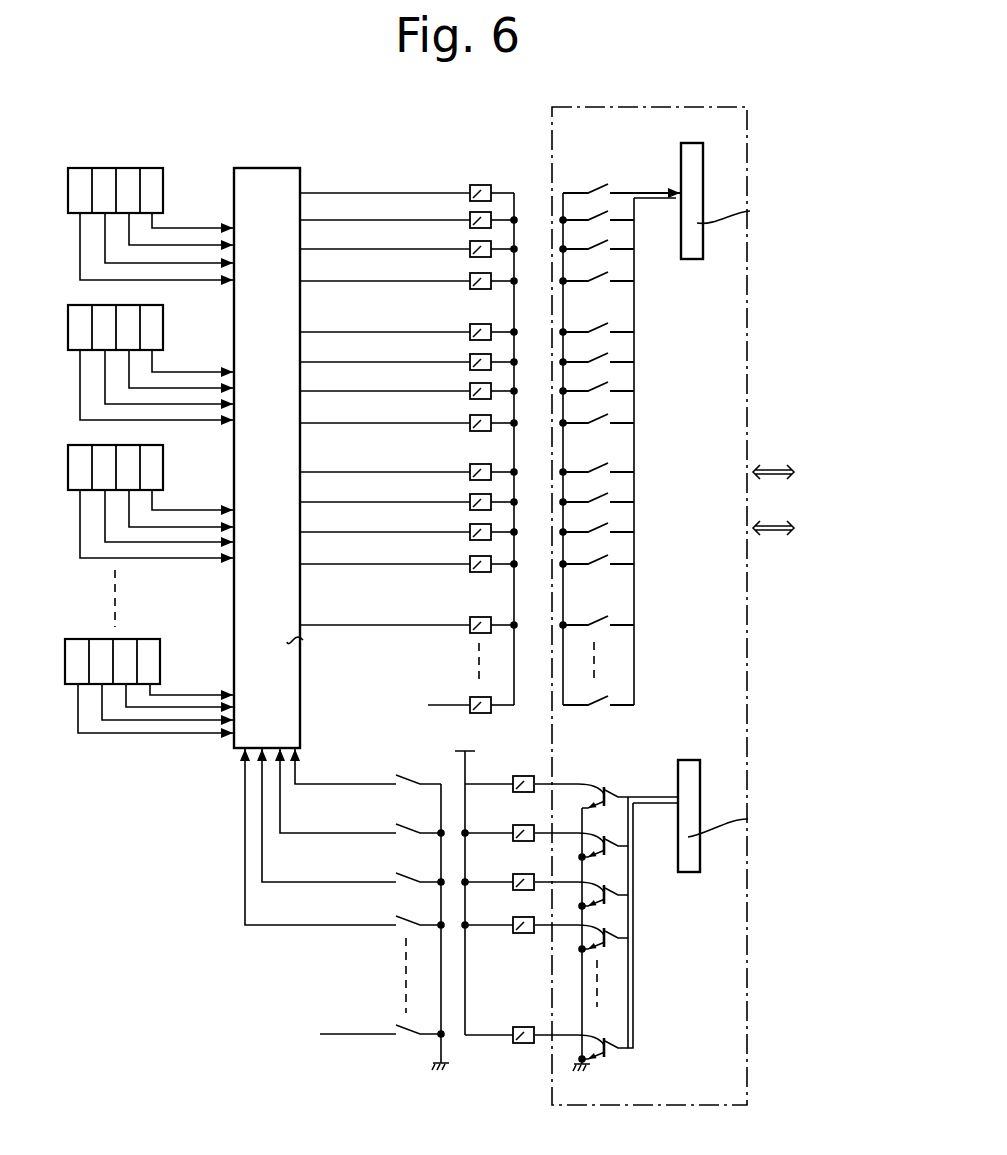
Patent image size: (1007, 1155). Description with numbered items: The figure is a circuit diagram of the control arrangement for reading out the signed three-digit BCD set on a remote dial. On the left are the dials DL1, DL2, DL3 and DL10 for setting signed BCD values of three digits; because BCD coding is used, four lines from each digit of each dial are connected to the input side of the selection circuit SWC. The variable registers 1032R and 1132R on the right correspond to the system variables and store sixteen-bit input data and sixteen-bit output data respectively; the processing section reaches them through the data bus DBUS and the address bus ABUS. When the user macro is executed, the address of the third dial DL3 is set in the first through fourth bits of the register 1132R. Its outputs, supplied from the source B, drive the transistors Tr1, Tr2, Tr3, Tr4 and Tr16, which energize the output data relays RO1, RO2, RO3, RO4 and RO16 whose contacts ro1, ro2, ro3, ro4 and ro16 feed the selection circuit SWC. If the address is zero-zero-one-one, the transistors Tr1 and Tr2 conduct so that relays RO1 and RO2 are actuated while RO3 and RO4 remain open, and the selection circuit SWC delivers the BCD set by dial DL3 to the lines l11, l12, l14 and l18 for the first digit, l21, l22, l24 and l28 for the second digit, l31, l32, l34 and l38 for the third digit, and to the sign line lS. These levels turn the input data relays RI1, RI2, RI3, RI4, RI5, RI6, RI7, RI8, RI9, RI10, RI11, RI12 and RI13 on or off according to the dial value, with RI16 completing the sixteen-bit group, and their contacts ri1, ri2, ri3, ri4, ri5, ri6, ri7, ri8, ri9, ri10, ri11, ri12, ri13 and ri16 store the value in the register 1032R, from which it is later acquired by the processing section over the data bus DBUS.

The selection circuit SWC is at (265, 168).
The dial DL1 is at (130, 168).
The dial DL2 is at (128, 306).
The third dial DL3 is at (128, 446).
The dial DL10 is at (130, 639).
The line l11 is at (385, 182).
The line l12 is at (385, 209).
The line l14 is at (385, 238).
The line l18 is at (385, 270).
The line l21 is at (385, 321).
The line l22 is at (385, 351).
The line l24 is at (385, 380).
The line l28 is at (385, 412).
The line l31 is at (385, 461).
The line l32 is at (385, 491).
The line l34 is at (385, 521).
The line l38 is at (385, 553).
The line lS is at (385, 613).
The input data relay RI1 is at (470, 186).
The input data relay RI2 is at (470, 213).
The input data relay RI3 is at (470, 242).
The input data relay RI4 is at (470, 274).
The input data relay RI5 is at (470, 325).
The input data relay RI6 is at (470, 355).
The input data relay RI7 is at (470, 384).
The input data relay RI8 is at (470, 416).
The input data relay RI9 is at (470, 465).
The input data relay RI10 is at (470, 495).
The input data relay RI11 is at (470, 525).
The input data relay RI12 is at (470, 557).
The input data relay RI13 is at (470, 617).
The input data relay RI16 is at (470, 696).
The contact ri1 is at (621, 182).
The contact ri2 is at (597, 211).
The contact ri3 is at (597, 240).
The contact ri4 is at (597, 272).
The contact ri5 is at (597, 323).
The contact ri6 is at (597, 353).
The contact ri7 is at (597, 382).
The contact ri8 is at (597, 414).
The contact ri9 is at (597, 463).
The contact ri10 is at (597, 493).
The contact ri11 is at (597, 523).
The contact ri12 is at (597, 555).
The contact ri13 is at (597, 615).
The contact ri16 is at (598, 694).
The variable register 1032R is at (687, 143).
The variable register 1132R is at (682, 758).
The data bus DBUS is at (809, 472).
The address bus ABUS is at (808, 528).
The contact ro1 is at (368, 766).
The contact ro2 is at (362, 792).
The contact ro3 is at (353, 817).
The contact ro4 is at (344, 838).
The contact ro16 is at (382, 1024).
The +B power supply B is at (463, 881).
The output data relay RO1 is at (517, 792).
The output data relay RO2 is at (517, 841).
The output data relay RO3 is at (517, 890).
The output data relay RO4 is at (517, 933).
The output data relay RO16 is at (517, 1043).
The transistor Tr1 is at (581, 785).
The transistor Tr2 is at (581, 836).
The transistor Tr3 is at (581, 886).
The transistor Tr4 is at (581, 928).
The transistor Tr16 is at (583, 1036).